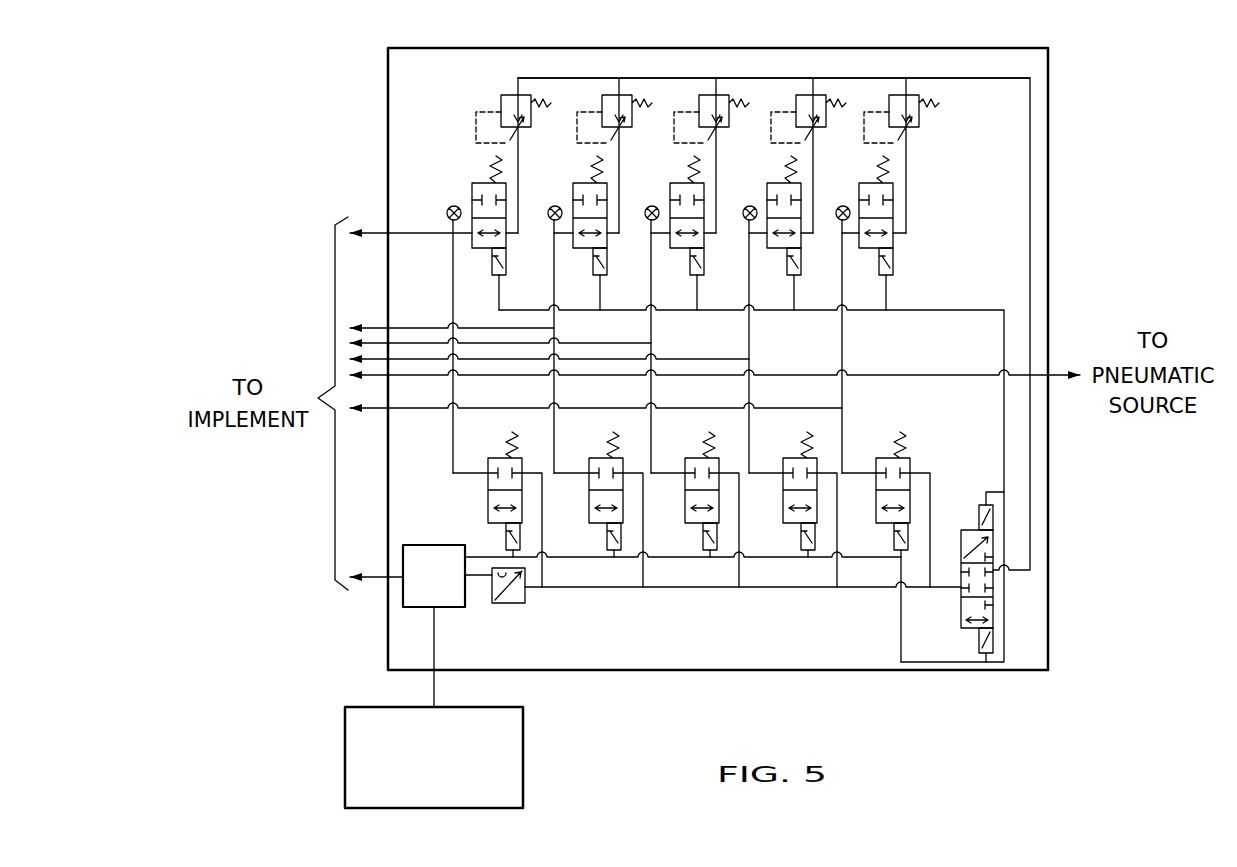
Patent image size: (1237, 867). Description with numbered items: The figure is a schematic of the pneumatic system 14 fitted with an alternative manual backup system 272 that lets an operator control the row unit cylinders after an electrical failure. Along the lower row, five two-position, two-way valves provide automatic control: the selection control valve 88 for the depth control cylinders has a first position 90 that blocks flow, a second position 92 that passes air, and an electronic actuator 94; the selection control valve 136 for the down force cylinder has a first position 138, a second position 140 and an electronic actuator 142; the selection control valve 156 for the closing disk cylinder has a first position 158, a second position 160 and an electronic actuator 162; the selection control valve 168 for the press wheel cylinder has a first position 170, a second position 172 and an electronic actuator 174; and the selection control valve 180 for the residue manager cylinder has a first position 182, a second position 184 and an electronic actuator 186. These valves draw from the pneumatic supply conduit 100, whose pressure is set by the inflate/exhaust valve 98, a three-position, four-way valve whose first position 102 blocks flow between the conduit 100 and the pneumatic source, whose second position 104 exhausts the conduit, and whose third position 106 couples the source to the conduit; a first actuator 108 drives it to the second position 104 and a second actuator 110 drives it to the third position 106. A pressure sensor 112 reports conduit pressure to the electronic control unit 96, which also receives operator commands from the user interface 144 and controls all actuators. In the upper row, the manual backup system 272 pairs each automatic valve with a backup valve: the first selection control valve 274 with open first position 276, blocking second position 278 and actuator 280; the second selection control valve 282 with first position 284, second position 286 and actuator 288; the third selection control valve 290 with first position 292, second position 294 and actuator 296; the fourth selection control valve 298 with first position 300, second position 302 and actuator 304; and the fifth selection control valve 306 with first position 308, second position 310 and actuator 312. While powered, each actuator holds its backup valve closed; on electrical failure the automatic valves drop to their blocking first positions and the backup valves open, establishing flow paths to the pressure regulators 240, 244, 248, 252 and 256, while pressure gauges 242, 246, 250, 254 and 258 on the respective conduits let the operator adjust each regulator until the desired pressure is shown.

The pneumatic control system 14 is at (1052, 72).
The pressure regulator 244 is at (517, 93).
The pressure regulator 252 is at (618, 93).
The pressure regulator 248 is at (718, 93).
The pressure regulator 240 is at (810, 93).
The pressure regulator 256 is at (914, 93).
The second position 286 is at (477, 180).
The first position 284 is at (472, 243).
The second selection control valve 282 is at (468, 259).
The electronic actuator 288 is at (491, 263).
The pressure gauge 246 is at (447, 208).
The second position 302 is at (578, 182).
The fourth selection control valve 298 is at (566, 250).
The first position 300 is at (592, 252).
The electronic actuator 304 is at (608, 277).
The pressure gauge 254 is at (548, 211).
The second position 294 is at (676, 182).
The first position 292 is at (689, 262).
The third selection control valve 290 is at (670, 312).
The electronic actuator 296 is at (705, 272).
The pressure gauge 250 is at (645, 211).
The second position 278 is at (775, 182).
The first selection control valve 274 is at (779, 262).
The first position 276 is at (805, 240).
The electronic actuator 280 is at (803, 258).
The pressure gauge 242 is at (743, 211).
The second position 310 is at (895, 187).
The first position 308 is at (895, 237).
The fifth selection control valve 306 is at (902, 252).
The electronic actuator 312 is at (891, 274).
The pressure gauge 258 is at (836, 211).
The manual backup system 272 is at (962, 158).
The selection control valve 136 is at (531, 456).
The first position 138 is at (488, 493).
The second position 140 is at (488, 518).
The electronic actuator 142 is at (521, 542).
The first position 170 is at (588, 470).
The selection control valve 168 is at (580, 493).
The second position 172 is at (602, 525).
The electronic actuator 174 is at (622, 532).
The first position 158 is at (685, 468).
The selection control valve 156 is at (676, 490).
The second position 160 is at (703, 528).
The electronic actuator 162 is at (718, 537).
The first position 90 is at (783, 468).
The selection control valve 88 is at (773, 497).
The second position 92 is at (793, 528).
The electronic actuator 94 is at (818, 532).
The first position 182 is at (880, 460).
The second position 184 is at (876, 503).
The selection control valve 180 is at (918, 443).
The electronic actuator 186 is at (908, 537).
The inflate/exhaust valve 98 is at (966, 513).
The second actuator 110 is at (993, 515).
The third position 106 is at (995, 547).
The first position 102 is at (995, 580).
The second position 104 is at (995, 613).
The first actuator 108 is at (978, 647).
The pneumatic supply conduit 100 is at (773, 589).
The electronic control unit 96 is at (420, 608).
The pressure sensor 112 is at (505, 605).
The user interface 144 is at (523, 792).